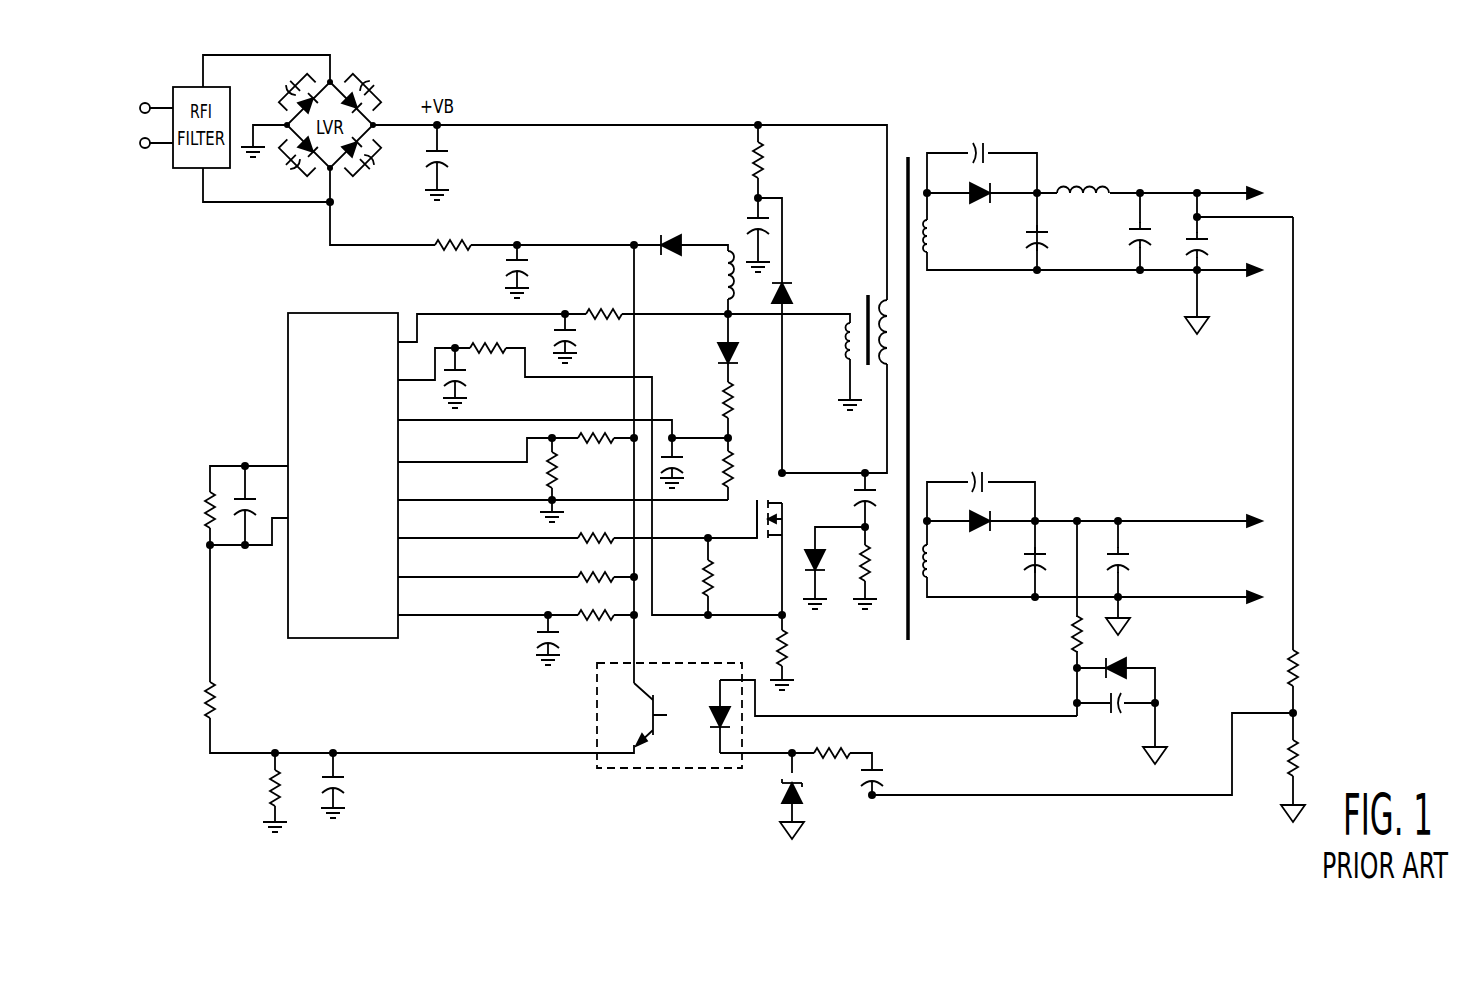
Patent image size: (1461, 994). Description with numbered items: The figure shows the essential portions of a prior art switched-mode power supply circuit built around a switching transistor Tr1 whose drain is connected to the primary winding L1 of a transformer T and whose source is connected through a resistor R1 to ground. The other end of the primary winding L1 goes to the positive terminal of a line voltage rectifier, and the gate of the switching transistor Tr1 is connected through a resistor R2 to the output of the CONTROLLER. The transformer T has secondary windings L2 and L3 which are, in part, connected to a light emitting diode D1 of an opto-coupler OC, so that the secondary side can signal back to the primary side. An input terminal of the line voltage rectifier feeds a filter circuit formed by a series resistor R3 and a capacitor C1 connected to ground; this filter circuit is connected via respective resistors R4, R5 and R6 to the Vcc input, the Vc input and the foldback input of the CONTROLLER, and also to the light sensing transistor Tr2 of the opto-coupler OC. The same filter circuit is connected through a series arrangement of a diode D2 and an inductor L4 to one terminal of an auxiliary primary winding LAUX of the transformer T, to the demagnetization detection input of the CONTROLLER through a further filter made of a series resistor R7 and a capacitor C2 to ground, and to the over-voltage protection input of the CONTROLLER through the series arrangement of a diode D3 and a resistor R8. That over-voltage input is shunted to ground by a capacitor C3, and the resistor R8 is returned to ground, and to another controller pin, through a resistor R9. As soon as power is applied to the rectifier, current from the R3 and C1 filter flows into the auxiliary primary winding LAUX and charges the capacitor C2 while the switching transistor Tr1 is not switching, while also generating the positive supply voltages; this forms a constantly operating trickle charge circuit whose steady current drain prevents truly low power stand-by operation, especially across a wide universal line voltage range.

The transformer T is at (911, 145).
The primary winding L1 is at (898, 326).
The secondary winding L2 is at (932, 230).
The secondary winding L3 is at (932, 558).
The inductor L4 is at (720, 282).
The auxiliary primary winding LAUX is at (850, 350).
The switching transistor Tr1 is at (777, 512).
The light sensing transistor Tr2 is at (653, 728).
The light emitting diode D1 is at (710, 711).
The diode D2 is at (678, 232).
The diode D3 is at (736, 357).
The resistor R1 is at (792, 640).
The resistor R2 is at (595, 548).
The series resistor R3 is at (446, 254).
The resistor R4 is at (599, 623).
The resistor R5 is at (595, 587).
The resistor R6 is at (590, 452).
The series resistor R7 is at (592, 308).
The resistor R8 is at (736, 409).
The resistor R9 is at (736, 463).
The capacitor C1 is at (530, 270).
The capacitor C2 is at (578, 342).
The capacitor C3 is at (690, 464).
The opto-coupler OC is at (680, 698).
The Controller CONTROLLER is at (330, 639).